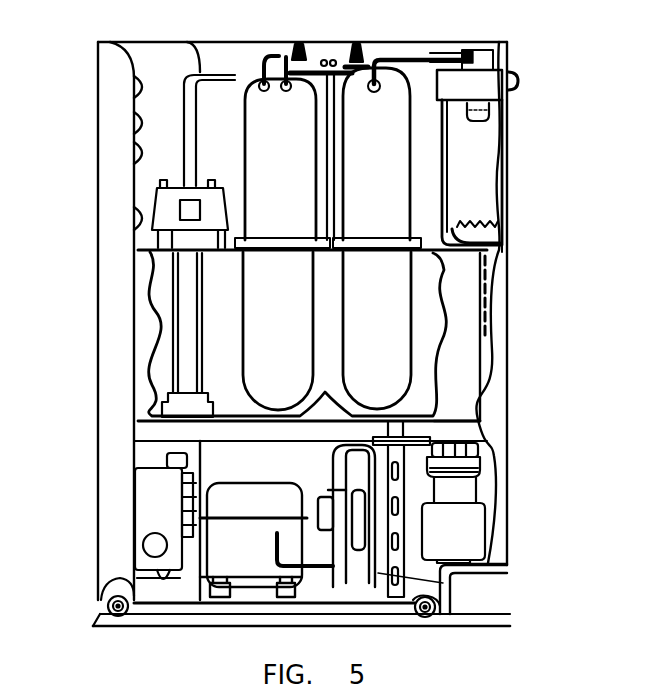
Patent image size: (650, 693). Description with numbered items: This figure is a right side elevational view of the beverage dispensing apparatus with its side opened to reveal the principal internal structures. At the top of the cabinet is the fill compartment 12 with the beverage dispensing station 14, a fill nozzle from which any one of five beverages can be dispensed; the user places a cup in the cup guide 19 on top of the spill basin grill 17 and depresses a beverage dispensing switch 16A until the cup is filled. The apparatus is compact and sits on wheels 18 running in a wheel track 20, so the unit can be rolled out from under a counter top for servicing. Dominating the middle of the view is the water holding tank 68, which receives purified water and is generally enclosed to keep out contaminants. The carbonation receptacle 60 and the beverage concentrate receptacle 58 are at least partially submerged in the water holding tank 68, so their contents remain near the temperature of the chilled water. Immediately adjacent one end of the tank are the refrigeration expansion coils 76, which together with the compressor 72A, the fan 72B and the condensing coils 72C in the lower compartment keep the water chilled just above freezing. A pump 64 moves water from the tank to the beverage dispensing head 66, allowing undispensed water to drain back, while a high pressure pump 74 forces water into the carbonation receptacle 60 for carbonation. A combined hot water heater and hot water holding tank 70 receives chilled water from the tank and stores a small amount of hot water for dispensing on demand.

The fill compartment 12 is at (485, 170).
The beverage dispensing station 14 is at (484, 113).
The beverage dispensing switch 16A is at (512, 80).
The spill basin grill 17 is at (537, 240).
The wheels 18 is at (135, 618).
The cup guide 19 is at (470, 219).
The wheel track 20 is at (283, 622).
The beverage concentrate receptacle 58 is at (364, 86).
The carbonation receptacle 60 is at (258, 100).
The pump 64 is at (165, 207).
The beverage dispensing head 66 is at (478, 87).
The water holding tank 68 is at (460, 336).
The combined hot water heater and hot water holding tank 70 is at (150, 503).
The compressor 72A is at (257, 553).
The fan 72B is at (357, 567).
The condensing coils 72C is at (443, 585).
The high pressure pump 74 is at (447, 525).
The refrigeration expansion coils 76 is at (487, 285).